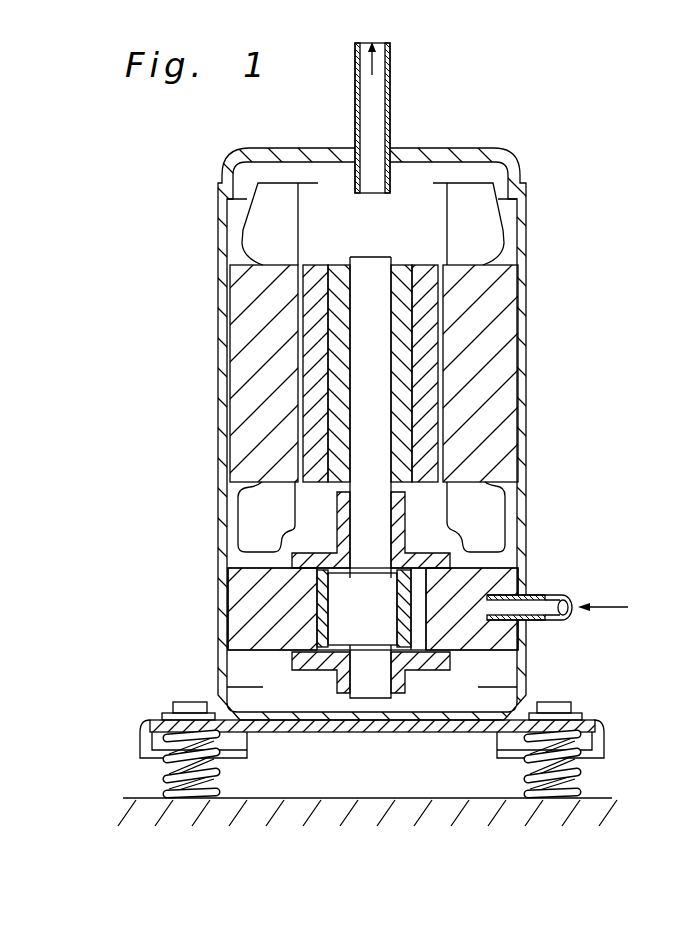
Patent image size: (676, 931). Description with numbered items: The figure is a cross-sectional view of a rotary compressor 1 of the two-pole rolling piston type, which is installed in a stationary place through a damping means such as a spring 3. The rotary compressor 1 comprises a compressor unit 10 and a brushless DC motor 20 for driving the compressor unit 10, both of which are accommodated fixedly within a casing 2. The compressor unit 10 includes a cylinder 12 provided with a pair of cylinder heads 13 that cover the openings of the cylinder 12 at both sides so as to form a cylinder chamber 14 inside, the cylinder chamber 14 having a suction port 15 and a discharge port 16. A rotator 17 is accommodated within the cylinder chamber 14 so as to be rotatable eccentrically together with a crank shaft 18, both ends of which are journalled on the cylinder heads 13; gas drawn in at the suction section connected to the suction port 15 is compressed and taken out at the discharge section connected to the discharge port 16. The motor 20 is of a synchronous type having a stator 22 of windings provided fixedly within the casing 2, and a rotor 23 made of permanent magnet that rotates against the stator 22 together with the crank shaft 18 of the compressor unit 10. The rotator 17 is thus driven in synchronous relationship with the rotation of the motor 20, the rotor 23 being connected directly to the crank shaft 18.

The rotary compressor 1 is at (202, 212).
The casing 2 is at (522, 225).
The spring 3 is at (163, 782).
The compressor unit 10 is at (379, 590).
The cylinder 12 is at (480, 635).
The cylinder heads 13 is at (430, 558).
The cylinder chamber 14 is at (417, 595).
The suction port 15 is at (555, 602).
The discharge port 16 is at (372, 110).
The rotator 17 is at (322, 613).
The crank shaft 18 is at (370, 625).
The DC motor 20 is at (379, 367).
The stator 22 is at (493, 357).
The rotor 23 is at (413, 322).